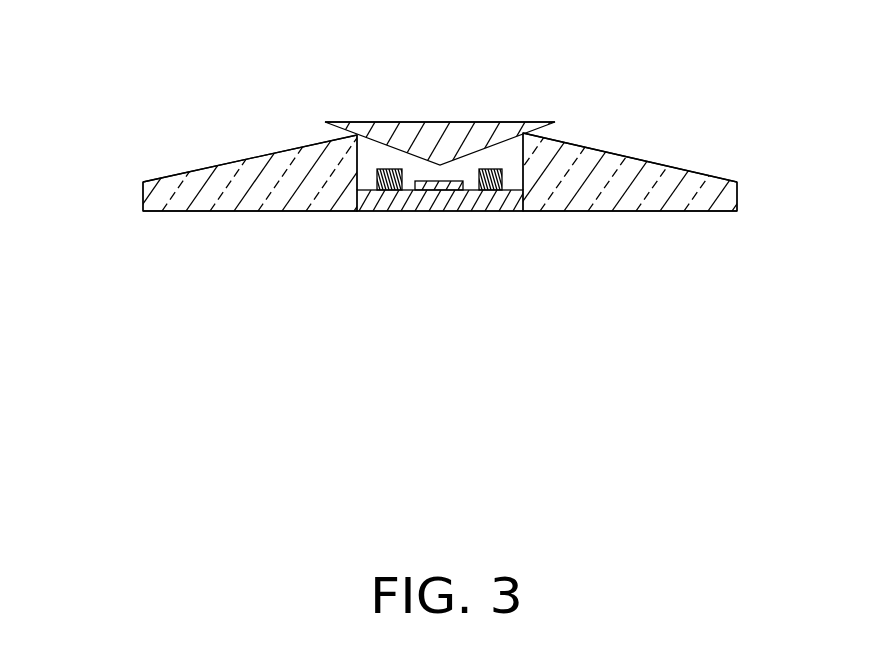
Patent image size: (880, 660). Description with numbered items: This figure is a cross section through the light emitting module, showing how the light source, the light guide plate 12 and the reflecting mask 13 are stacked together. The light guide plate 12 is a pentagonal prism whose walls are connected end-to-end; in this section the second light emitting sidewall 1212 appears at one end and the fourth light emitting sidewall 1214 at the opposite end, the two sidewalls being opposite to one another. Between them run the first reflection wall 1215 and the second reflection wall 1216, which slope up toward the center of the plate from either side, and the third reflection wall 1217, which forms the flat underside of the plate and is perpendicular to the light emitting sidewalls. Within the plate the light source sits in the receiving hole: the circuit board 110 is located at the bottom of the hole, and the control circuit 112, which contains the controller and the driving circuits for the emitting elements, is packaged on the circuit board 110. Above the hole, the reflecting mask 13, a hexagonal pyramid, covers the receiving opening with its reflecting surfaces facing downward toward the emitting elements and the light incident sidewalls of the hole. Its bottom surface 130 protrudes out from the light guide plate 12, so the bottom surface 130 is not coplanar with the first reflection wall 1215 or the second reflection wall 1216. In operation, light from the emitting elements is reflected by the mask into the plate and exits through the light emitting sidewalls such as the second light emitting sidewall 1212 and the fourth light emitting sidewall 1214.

The light guide plate 12 is at (200, 185).
The reflecting mask 13 is at (400, 122).
The bottom surface 130 is at (474, 112).
The circuit board 110 is at (403, 190).
The control circuit 112 is at (457, 188).
The second light emitting sidewall 1212 is at (132, 194).
The fourth light emitting sidewall 1214 is at (748, 195).
The first reflection wall 1215 is at (262, 145).
The second reflection wall 1216 is at (638, 148).
The third reflection wall 1217 is at (293, 222).